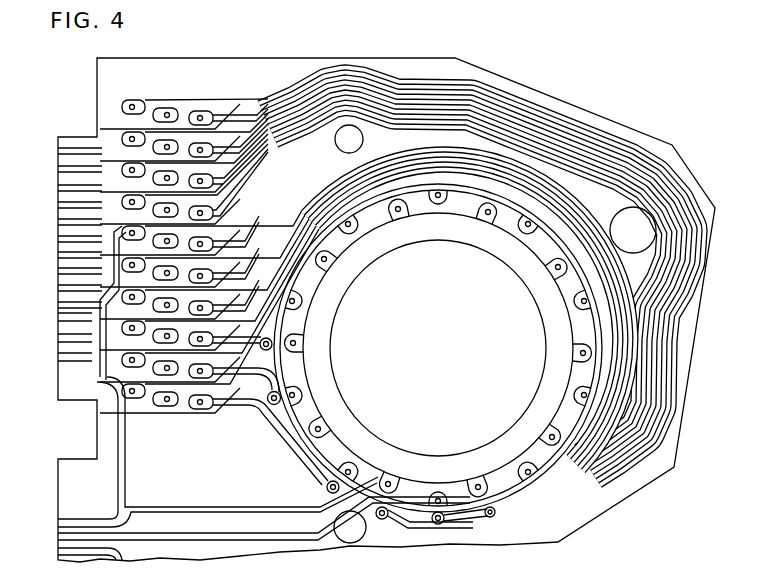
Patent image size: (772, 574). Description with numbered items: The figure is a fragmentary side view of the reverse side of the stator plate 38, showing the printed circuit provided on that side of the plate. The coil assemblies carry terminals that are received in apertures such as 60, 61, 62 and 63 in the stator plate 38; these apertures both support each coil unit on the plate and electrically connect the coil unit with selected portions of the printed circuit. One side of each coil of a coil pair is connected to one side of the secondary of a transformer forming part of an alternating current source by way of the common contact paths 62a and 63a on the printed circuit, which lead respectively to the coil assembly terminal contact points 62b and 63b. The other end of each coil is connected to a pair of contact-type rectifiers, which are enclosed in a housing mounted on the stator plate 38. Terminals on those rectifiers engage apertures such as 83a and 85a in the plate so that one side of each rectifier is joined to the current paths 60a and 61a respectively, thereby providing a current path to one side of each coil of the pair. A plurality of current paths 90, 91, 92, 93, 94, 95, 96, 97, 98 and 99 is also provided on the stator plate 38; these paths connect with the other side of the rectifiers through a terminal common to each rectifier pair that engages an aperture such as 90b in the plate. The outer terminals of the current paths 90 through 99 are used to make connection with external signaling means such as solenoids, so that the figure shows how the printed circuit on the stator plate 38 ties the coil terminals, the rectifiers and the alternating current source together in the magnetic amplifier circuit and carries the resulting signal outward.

The stator plate 38 is at (386, 57).
The current path 98 is at (60, 152).
The current path 97 is at (60, 170).
The current path 96 is at (60, 189).
The current path 95 is at (60, 206).
The current path 94 is at (60, 223).
The current path 93 is at (60, 240).
The current path 92 is at (60, 256).
The current path 91 is at (60, 272).
The current path 90 is at (60, 289).
The current path 99 is at (60, 306).
The aperture 85a is at (128, 360).
The aperture 90b is at (167, 372).
The aperture 83a is at (198, 376).
The current path 60a is at (240, 378).
The aperture 60 is at (273, 405).
The aperture 61 is at (272, 340).
The aperture 62 is at (297, 342).
The common contact path 62a is at (305, 356).
The current path 61a is at (278, 364).
The aperture 63 is at (297, 395).
The common contact path 63a is at (333, 462).
The coil assembly terminal contact point 63b is at (60, 518).
The coil assembly terminal contact point 62b is at (60, 537).